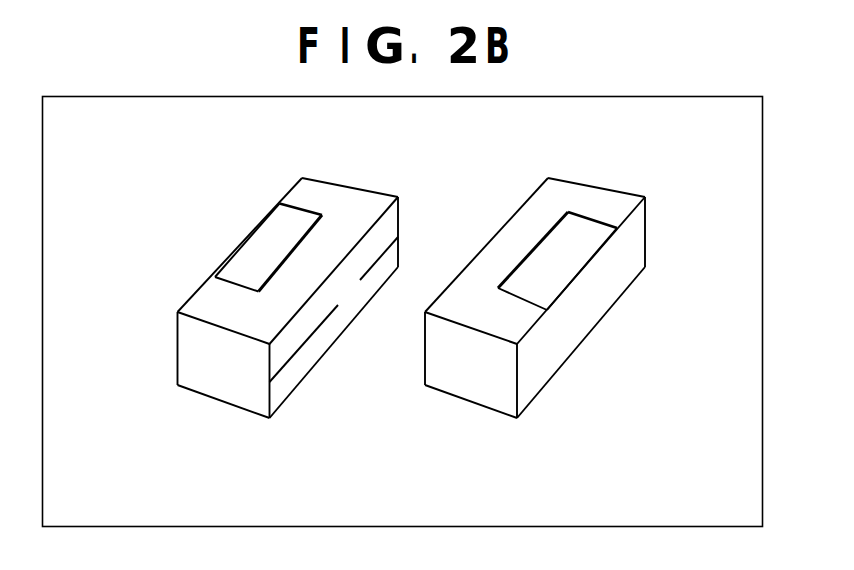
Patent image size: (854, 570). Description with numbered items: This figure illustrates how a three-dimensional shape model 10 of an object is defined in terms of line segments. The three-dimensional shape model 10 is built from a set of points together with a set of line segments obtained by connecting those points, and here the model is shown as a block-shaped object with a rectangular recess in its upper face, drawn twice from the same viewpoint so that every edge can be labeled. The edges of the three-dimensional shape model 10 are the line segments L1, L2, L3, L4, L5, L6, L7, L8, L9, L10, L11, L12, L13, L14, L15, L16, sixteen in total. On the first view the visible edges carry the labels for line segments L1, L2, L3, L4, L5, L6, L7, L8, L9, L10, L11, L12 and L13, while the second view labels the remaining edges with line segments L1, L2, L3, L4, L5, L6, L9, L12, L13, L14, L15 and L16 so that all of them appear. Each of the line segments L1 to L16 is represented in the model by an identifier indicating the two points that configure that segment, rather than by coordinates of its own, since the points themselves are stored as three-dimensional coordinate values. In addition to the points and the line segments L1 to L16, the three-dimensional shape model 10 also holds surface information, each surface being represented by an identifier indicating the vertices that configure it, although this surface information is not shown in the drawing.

The three-dimensional shape model 10 is at (405, 311).
The line segment L1 is at (398, 245).
The line segment L2 is at (415, 254).
The line segment L3 is at (414, 252).
The line segment L4 is at (414, 255).
The line segment L5 is at (409, 260).
The line segment L6 is at (412, 291).
The line segment L7 is at (334, 342).
The line segment L8 is at (224, 411).
The line segment L9 is at (412, 291).
The line segment L10 is at (250, 381).
The line segment L11 is at (346, 291).
The line segment L12 is at (397, 261).
The line segment L13 is at (412, 259).
The line segment L14 is at (581, 342).
The line segment L15 is at (537, 381).
The line segment L16 is at (471, 411).